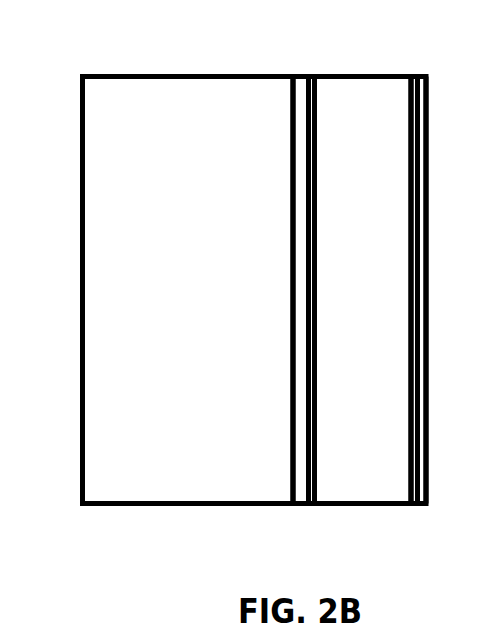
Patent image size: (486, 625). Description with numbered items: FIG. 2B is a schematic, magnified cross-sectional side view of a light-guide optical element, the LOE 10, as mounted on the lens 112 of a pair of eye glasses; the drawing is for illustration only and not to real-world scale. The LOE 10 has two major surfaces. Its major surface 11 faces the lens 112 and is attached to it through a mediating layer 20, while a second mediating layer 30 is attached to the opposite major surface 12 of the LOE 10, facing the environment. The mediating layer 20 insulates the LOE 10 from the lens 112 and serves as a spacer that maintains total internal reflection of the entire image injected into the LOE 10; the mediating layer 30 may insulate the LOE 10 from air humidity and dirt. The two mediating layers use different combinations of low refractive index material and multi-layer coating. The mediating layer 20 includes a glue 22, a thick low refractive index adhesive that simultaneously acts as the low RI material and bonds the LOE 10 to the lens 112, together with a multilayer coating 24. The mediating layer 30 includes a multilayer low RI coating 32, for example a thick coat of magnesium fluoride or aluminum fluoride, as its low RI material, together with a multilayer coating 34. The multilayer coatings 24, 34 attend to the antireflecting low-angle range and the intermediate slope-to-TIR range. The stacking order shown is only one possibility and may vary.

The LOE 10 is at (358, 88).
The major surface 11 is at (312, 145).
The major surface 12 is at (415, 275).
The mediating layer 20 is at (317, 65).
The glue 22 is at (300, 492).
The multilayer coating 24 is at (311, 507).
The mediating layer 30 is at (431, 65).
The multilayer low RI coating 32 is at (420, 507).
The multilayer coating 34 is at (415, 507).
The lens 112 is at (112, 92).